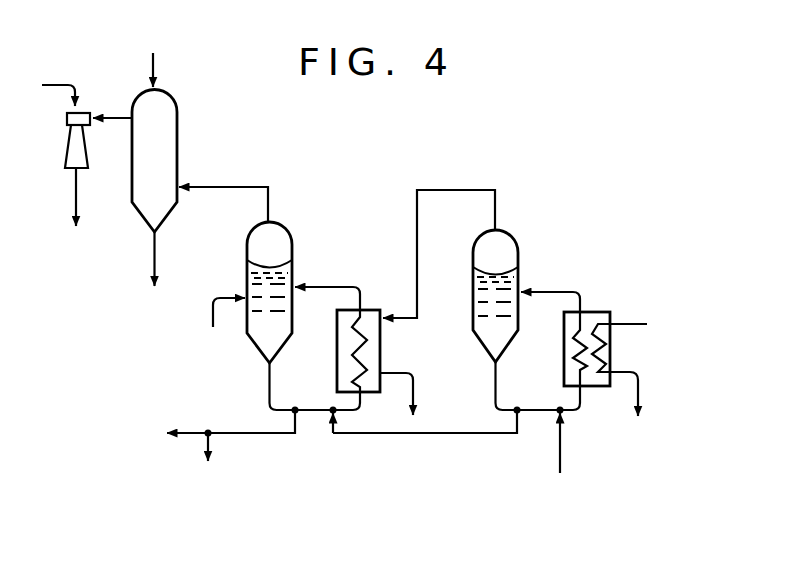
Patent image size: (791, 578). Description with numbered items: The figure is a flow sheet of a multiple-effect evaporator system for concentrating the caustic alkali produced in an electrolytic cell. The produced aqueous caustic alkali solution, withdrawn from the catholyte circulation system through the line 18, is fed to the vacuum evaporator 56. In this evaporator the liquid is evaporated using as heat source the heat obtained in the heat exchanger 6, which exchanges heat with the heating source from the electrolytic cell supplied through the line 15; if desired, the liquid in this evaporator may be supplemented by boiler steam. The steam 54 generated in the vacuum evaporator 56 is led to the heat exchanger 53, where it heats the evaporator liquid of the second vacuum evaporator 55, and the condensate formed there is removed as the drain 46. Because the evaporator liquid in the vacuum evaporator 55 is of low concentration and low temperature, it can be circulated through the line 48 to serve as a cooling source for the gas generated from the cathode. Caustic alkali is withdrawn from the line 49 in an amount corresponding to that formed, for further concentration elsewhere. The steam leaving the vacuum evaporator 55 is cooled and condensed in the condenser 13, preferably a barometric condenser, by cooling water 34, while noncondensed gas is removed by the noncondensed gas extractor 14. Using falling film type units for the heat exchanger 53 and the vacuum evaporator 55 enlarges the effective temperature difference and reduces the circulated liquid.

The cooling water 34 is at (153, 58).
The condenser 13 is at (180, 188).
The noncondensed gas extractor 14 is at (71, 152).
The vacuum evaporator 55 is at (382, 327).
The line 48 is at (219, 395).
The line 49 is at (214, 427).
The heat exchanger 53 is at (379, 345).
The drain 46 is at (414, 400).
The steam 54 is at (417, 221).
The vacuum evaporator 56 is at (526, 322).
The line 18 is at (562, 458).
The heat exchanger with catholyte 6 is at (594, 312).
The line 15 is at (635, 364).